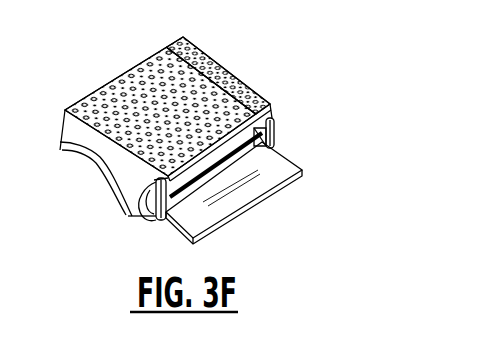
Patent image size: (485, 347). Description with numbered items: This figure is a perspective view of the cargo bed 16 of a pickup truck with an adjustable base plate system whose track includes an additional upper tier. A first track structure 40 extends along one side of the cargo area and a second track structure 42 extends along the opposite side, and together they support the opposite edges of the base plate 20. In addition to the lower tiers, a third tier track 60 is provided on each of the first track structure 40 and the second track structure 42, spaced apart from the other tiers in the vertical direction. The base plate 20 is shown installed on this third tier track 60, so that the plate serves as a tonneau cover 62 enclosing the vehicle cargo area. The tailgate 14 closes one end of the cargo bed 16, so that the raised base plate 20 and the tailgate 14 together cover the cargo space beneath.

The tailgate 14 is at (235, 193).
The cargo bed 16 is at (62, 138).
The base plate 20 is at (123, 72).
The first track structure 40 is at (152, 222).
The second track structure 42 is at (278, 138).
The third tier track 60 is at (277, 127).
The tonneau cover 62 is at (208, 87).